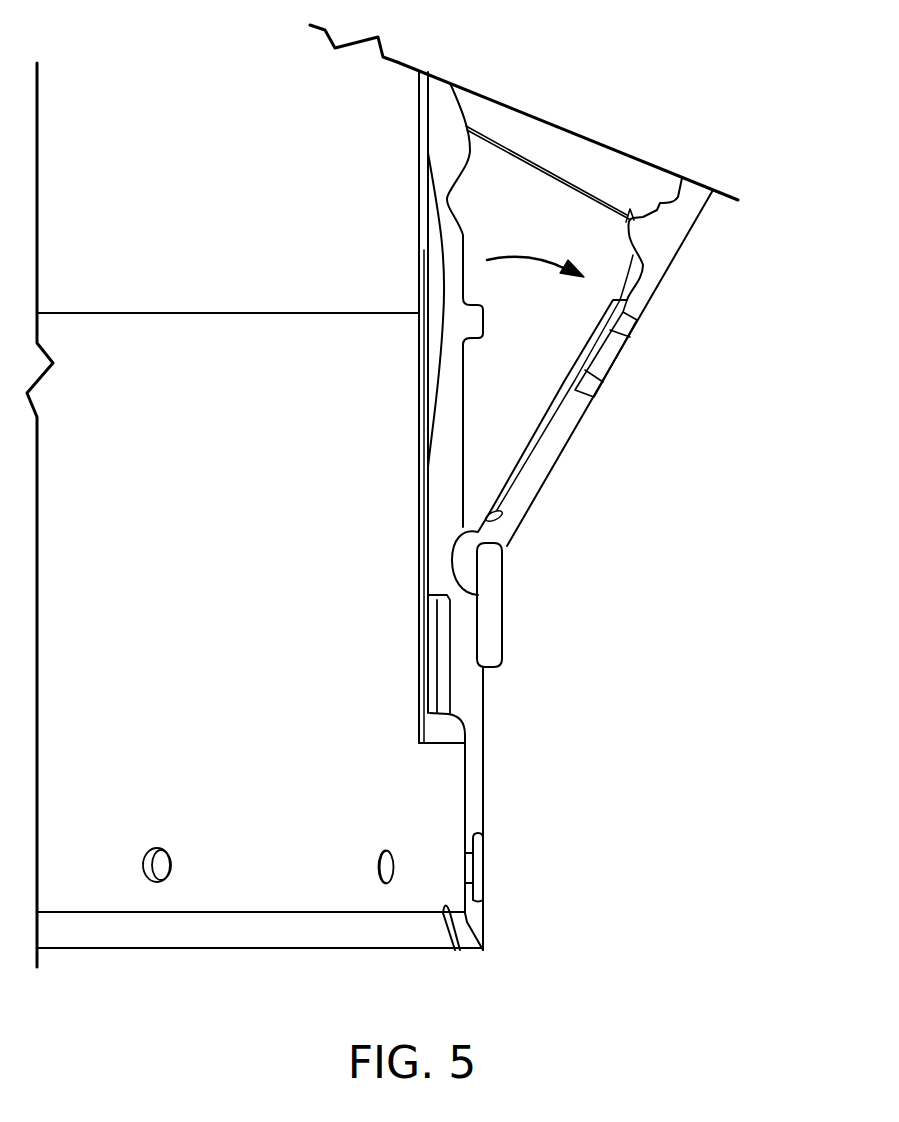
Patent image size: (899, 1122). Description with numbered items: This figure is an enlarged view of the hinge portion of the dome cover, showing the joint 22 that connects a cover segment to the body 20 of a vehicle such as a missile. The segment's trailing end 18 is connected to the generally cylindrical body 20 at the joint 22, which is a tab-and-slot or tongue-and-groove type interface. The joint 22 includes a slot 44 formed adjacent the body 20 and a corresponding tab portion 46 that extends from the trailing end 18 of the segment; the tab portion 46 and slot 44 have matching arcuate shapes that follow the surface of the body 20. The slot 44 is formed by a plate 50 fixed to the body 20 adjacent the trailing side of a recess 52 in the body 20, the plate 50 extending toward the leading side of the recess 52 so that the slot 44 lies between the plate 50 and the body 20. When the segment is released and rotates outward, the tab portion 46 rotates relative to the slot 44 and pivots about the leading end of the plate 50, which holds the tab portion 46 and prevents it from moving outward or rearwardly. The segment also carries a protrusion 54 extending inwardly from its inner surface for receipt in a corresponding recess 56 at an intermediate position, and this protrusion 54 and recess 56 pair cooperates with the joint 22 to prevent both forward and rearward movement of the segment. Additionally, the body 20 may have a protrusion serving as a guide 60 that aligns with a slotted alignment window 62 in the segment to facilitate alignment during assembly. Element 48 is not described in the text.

The trailing end 18 is at (607, 465).
The body 20 is at (473, 813).
The joint 22 is at (615, 546).
The slot 44 is at (462, 557).
The tab portion 46 is at (480, 533).
The tab 48 is at (503, 567).
The plate 50 is at (490, 652).
The recess 52 is at (440, 582).
The protrusion 54 is at (643, 232).
The recess 56 is at (457, 198).
The guide 60 is at (470, 325).
The slotted alignment window 62 is at (650, 343).